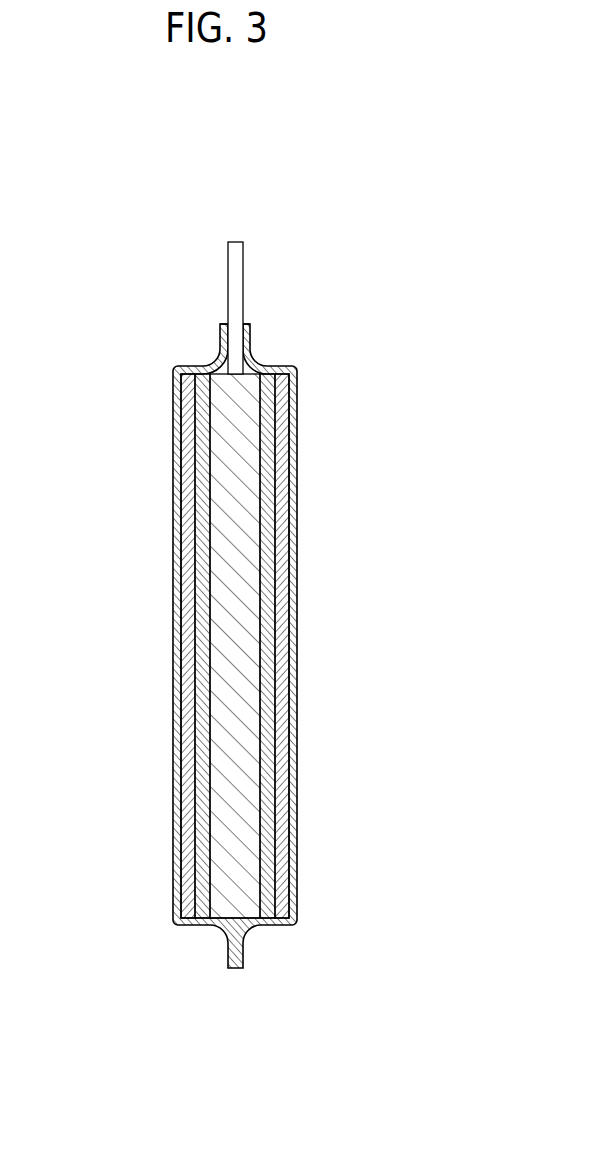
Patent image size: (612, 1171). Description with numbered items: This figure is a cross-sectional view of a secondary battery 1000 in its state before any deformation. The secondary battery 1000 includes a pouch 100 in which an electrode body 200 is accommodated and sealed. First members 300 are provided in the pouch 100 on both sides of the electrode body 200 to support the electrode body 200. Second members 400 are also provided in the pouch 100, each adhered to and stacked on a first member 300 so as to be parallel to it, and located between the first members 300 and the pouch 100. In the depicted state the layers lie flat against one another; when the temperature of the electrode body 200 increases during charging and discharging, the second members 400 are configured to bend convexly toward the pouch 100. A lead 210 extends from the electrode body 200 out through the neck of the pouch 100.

The secondary battery 1000 is at (145, 182).
The pouch 100 is at (177, 533).
The electrode body 200 is at (230, 605).
The electrode tab / lead 210 is at (237, 258).
The first member 300 is at (200, 440).
The second member 400 is at (190, 478).